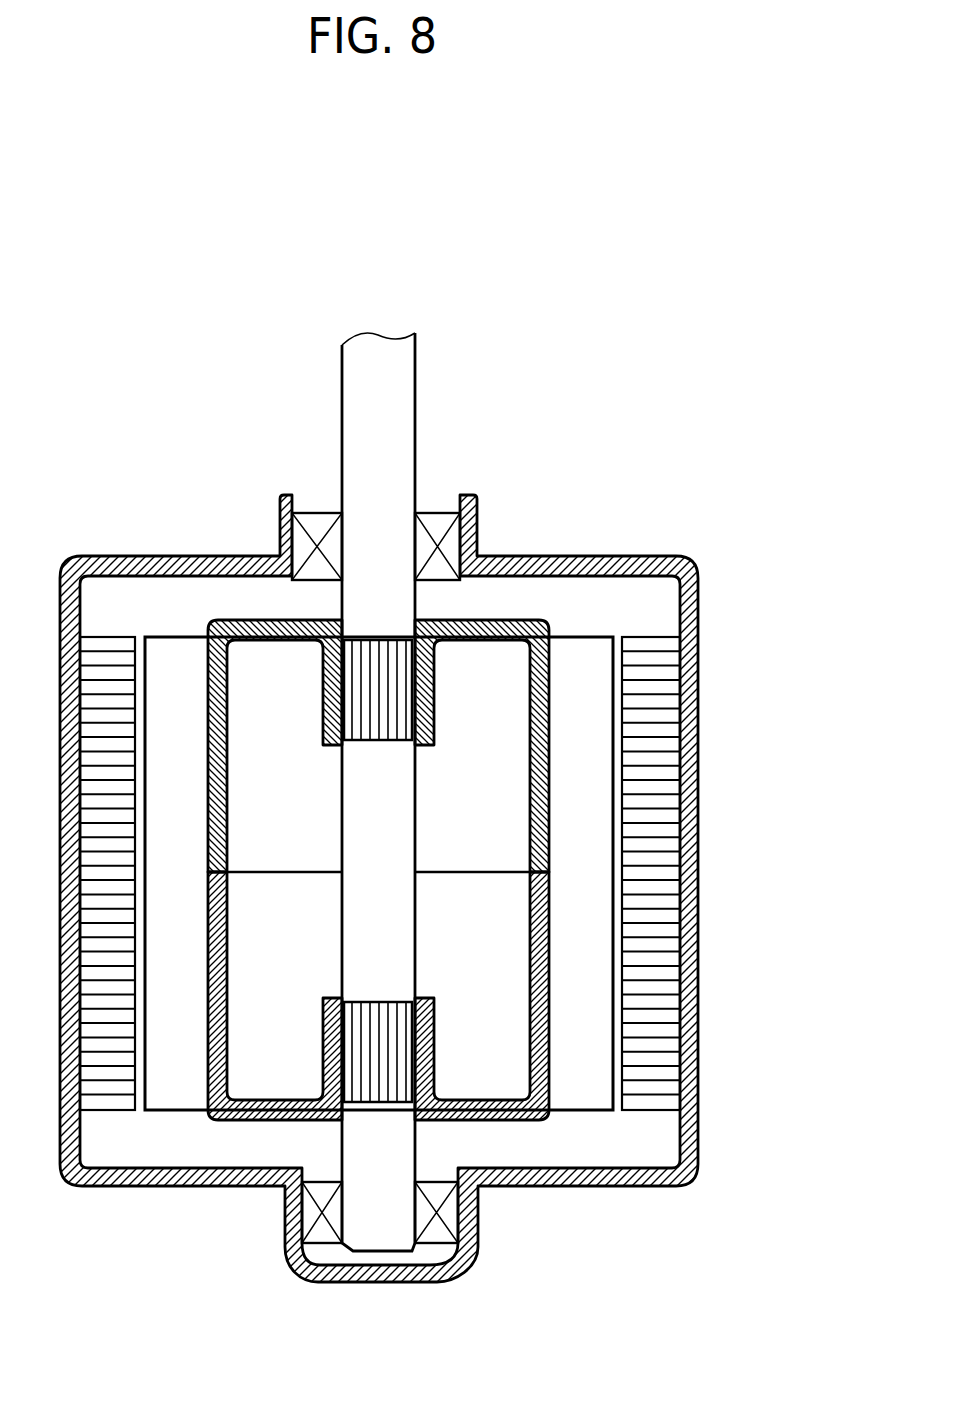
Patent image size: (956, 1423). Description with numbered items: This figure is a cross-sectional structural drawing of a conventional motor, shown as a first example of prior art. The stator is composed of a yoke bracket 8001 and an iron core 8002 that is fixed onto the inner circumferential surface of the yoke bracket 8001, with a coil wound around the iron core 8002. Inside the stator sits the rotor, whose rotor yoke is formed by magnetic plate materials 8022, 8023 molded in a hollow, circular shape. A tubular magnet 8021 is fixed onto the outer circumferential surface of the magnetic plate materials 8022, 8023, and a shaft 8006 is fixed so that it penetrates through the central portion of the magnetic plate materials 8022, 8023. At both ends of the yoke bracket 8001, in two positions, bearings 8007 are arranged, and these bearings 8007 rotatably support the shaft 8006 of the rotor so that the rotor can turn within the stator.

The yoke bracket 8001 is at (696, 817).
The iron core 8002 is at (668, 970).
The shaft 8006 is at (372, 1227).
The bearings 8007 is at (433, 522).
The magnet 8021 is at (582, 1092).
The magnetic plate material 8022 is at (215, 620).
The magnetic plate material 8023 is at (232, 1120).